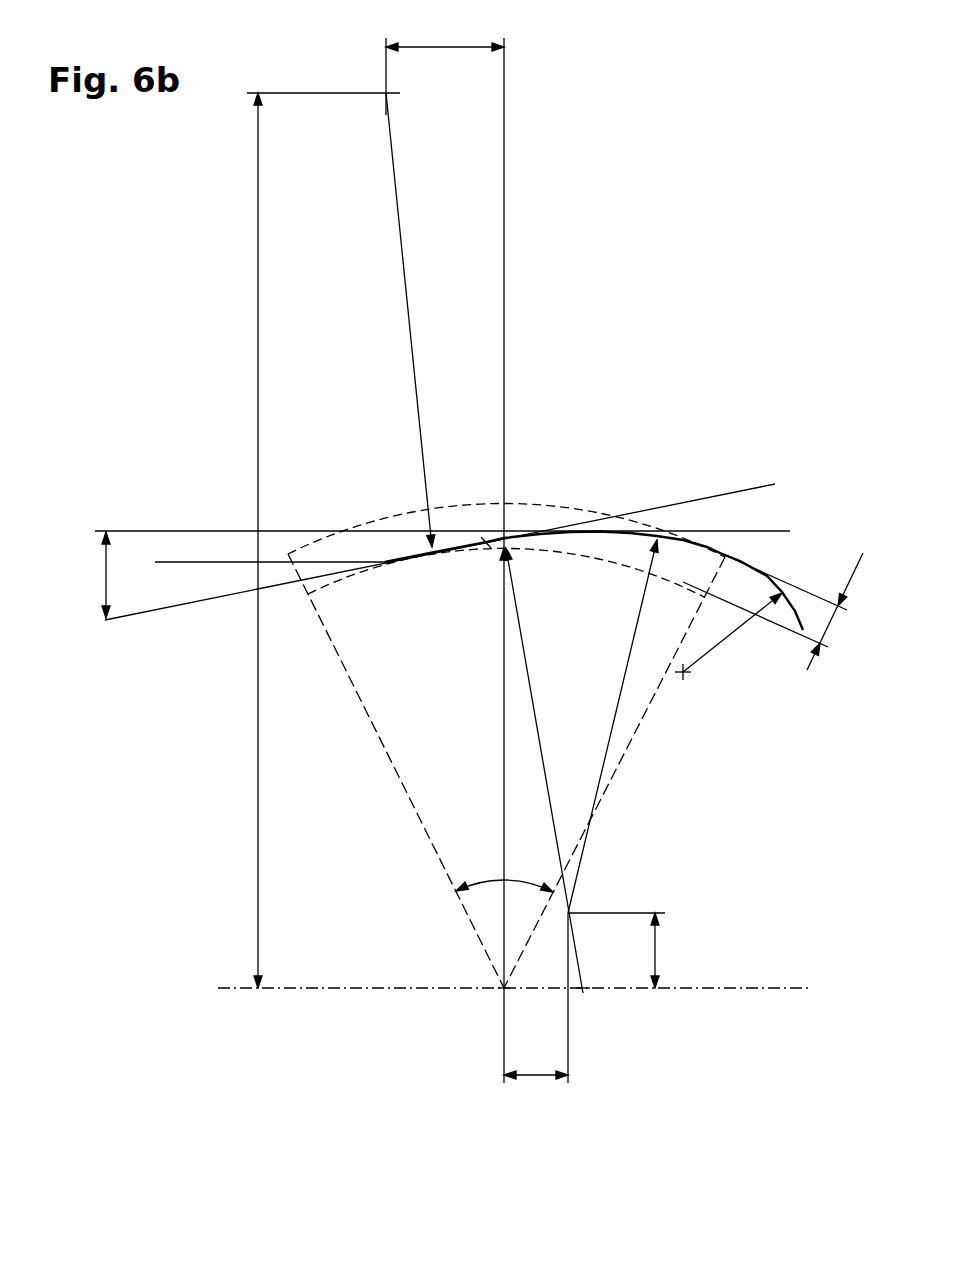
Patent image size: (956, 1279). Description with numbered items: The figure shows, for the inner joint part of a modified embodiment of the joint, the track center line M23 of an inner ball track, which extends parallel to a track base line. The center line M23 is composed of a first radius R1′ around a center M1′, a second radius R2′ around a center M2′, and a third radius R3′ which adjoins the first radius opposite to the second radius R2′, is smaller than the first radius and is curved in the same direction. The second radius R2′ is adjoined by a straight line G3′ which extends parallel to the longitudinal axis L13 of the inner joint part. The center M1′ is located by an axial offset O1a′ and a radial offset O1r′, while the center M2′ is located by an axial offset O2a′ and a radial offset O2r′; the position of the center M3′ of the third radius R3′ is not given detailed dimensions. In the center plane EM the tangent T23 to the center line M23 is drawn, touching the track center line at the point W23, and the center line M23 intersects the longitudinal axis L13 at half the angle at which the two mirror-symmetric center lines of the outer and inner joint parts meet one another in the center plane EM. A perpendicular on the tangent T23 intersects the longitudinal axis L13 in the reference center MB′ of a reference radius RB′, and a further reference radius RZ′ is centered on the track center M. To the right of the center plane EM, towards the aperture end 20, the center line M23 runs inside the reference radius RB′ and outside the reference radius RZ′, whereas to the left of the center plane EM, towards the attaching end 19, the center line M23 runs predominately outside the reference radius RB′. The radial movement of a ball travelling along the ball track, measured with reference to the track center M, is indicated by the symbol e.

The center plane EM is at (507, 322).
The longitudinal axis L13 is at (222, 992).
The track center M is at (504, 992).
The straight line G3′ is at (177, 560).
The track center line M23 is at (208, 565).
The tangent T23 is at (148, 613).
The transition point of the tooth flank W23 is at (487, 547).
The further reference radius RZ′ is at (502, 724).
The reference radius RB′ is at (538, 725).
The reference center MB′ is at (585, 992).
The second radius R2′ is at (408, 325).
The center of second radius M2′ is at (386, 93).
The axial offset O2a′ is at (447, 48).
The radial offset O2r′ is at (256, 335).
The first radius R1′ is at (634, 633).
The center of first radius M1′ is at (570, 910).
The radial offset O1r′ is at (657, 950).
The axial offset O1a′ is at (535, 1078).
The center of third radius M3′ is at (688, 676).
The third radius R3′ is at (735, 631).
The radial ball movement e is at (773, 611).
The attaching end 19 is at (166, 822).
The aperture end 20 is at (836, 822).